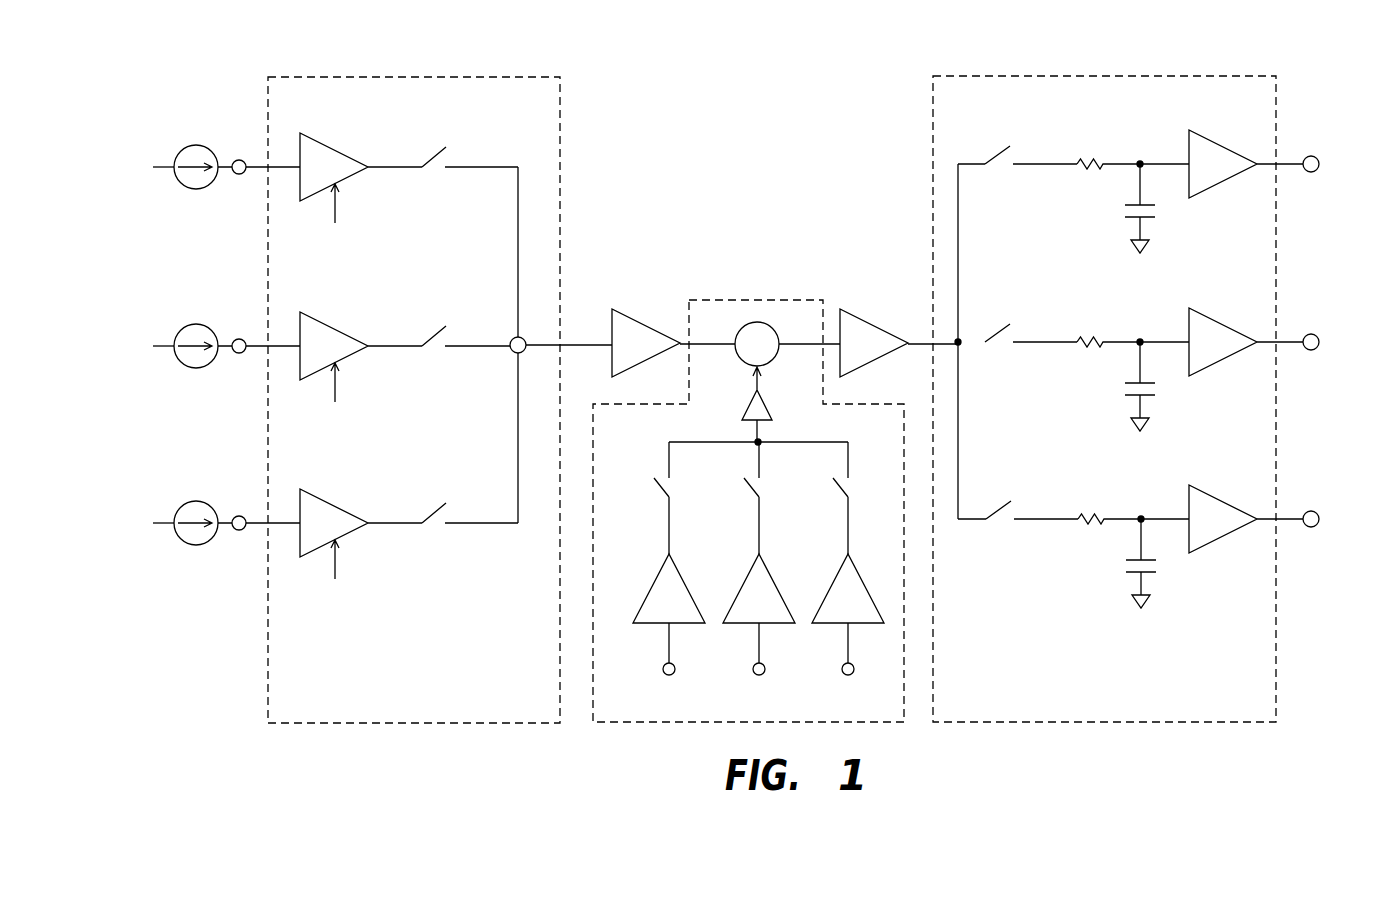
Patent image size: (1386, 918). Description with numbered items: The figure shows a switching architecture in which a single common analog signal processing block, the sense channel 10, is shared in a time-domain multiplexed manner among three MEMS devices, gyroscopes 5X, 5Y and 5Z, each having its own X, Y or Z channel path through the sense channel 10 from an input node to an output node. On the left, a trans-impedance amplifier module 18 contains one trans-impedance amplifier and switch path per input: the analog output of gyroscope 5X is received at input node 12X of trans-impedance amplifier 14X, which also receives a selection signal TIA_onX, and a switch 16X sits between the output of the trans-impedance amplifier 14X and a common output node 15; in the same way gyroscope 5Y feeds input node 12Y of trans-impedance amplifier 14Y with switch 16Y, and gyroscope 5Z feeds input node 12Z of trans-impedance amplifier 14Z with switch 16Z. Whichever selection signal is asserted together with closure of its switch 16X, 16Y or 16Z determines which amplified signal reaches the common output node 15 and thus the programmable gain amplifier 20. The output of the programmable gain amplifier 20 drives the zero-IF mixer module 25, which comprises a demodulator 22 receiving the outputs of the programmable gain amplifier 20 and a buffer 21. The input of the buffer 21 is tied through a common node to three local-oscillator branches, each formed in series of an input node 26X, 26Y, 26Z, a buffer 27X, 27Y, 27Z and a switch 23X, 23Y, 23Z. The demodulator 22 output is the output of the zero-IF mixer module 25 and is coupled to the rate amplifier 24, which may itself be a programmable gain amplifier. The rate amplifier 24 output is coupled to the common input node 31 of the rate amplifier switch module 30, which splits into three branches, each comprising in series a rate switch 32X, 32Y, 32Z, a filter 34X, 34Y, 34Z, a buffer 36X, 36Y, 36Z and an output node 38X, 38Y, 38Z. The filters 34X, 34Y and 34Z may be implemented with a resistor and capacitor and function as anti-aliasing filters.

The sense channel 10 is at (783, 83).
The gyroscope 5X is at (193, 146).
The gyroscope 5Y is at (191, 325).
The gyroscope 5Z is at (192, 502).
The input node 12X is at (239, 175).
The input node 12Y is at (240, 353).
The input node 12Z is at (240, 530).
The trans-impedance amplifier 14X is at (330, 145).
The trans-impedance amplifier 14Y is at (330, 323).
The trans-impedance amplifier 14Z is at (332, 503).
The common output node 15 is at (514, 337).
The switch 16X is at (431, 170).
The switch 16Y is at (431, 349).
The switch 16Z is at (431, 526).
The trans-impedance amplifier module 18 is at (563, 108).
The programmable gain amplifier 20 is at (652, 327).
The buffer 21 is at (772, 418).
The demodulator 22 is at (753, 323).
The switch 23X is at (656, 492).
The switch 23Y is at (746, 492).
The switch 23Z is at (838, 492).
The rate amplifier 24 is at (887, 328).
The zero-IF mixer module 25 is at (746, 298).
The input node 26X is at (666, 663).
The input node 26Y is at (755, 663).
The input node 26Z is at (845, 663).
The buffer 27X is at (661, 568).
The buffer 27Y is at (750, 568).
The buffer 27Z is at (840, 570).
The rate amplifier switch module 30 is at (930, 83).
The common input node 31 is at (962, 336).
The rate switch 32X is at (1014, 200).
The rate switch 32Y is at (1014, 380).
The rate switch 32Z is at (1014, 558).
The filter 34X is at (1130, 148).
The filter 34Y is at (1125, 330).
The filter 34Z is at (1122, 508).
The buffer 36X is at (1232, 178).
The buffer 36Y is at (1232, 356).
The buffer 36Z is at (1232, 533).
The output node 38X is at (1313, 156).
The output node 38Y is at (1313, 334).
The output node 38Z is at (1313, 511).